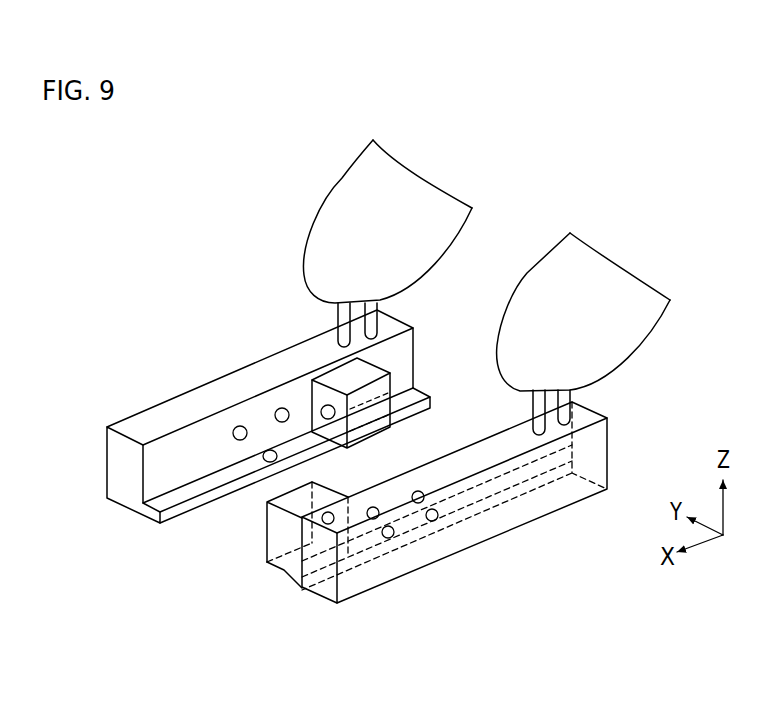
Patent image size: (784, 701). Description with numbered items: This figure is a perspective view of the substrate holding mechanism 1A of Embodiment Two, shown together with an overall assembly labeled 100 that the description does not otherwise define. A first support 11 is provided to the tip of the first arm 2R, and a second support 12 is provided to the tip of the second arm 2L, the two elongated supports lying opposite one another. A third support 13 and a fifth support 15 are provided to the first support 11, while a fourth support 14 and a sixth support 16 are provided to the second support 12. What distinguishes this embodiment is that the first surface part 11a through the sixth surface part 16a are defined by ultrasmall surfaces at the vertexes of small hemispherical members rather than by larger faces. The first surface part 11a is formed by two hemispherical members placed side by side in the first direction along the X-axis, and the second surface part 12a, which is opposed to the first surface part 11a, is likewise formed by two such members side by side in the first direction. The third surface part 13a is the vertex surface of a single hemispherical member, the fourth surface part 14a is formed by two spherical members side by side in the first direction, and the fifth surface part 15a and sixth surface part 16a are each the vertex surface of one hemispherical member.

The foot operated controller 100 is at (672, 141).
The substrate holding mechanism 1A is at (78, 360).
The first arm 2R is at (342, 178).
The second arm 2L is at (527, 273).
The first support 11 is at (218, 387).
The first surface part 11a is at (280, 408).
The third support 13 is at (187, 520).
The third surface part 13a is at (262, 456).
The fifth support 15 is at (378, 360).
The fifth surface part 15a is at (338, 420).
The second support 12 is at (495, 525).
The second surface part 12a is at (426, 488).
The fourth support 14 is at (283, 572).
The fourth surface part 14a is at (433, 522).
The sixth support 16 is at (265, 540).
The sixth surface part 16a is at (335, 512).